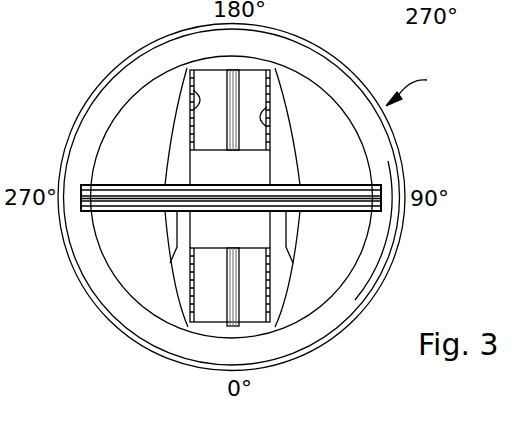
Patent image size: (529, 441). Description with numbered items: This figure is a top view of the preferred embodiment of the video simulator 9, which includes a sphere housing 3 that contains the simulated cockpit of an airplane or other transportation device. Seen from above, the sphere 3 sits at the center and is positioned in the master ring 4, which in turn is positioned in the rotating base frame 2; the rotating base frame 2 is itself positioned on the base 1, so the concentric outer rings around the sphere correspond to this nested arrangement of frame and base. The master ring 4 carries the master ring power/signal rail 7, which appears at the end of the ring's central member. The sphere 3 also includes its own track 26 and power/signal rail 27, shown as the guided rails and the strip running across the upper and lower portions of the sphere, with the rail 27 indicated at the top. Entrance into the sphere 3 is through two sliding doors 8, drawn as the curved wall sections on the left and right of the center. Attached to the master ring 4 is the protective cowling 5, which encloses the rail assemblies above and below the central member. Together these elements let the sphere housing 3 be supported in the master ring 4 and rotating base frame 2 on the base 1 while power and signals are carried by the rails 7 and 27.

The base 1 is at (393, 243).
The rotating base frame 2 is at (383, 259).
The sphere housing 3 is at (340, 173).
The master ring 4 is at (352, 186).
The protective cowling 5 is at (216, 116).
The master ring power/signal rail 7 is at (382, 199).
The sliding doors 8 is at (165, 228).
The video simulator 9 is at (414, 87).
The track 26 is at (190, 102).
The power/signal rail 27 is at (233, 70).